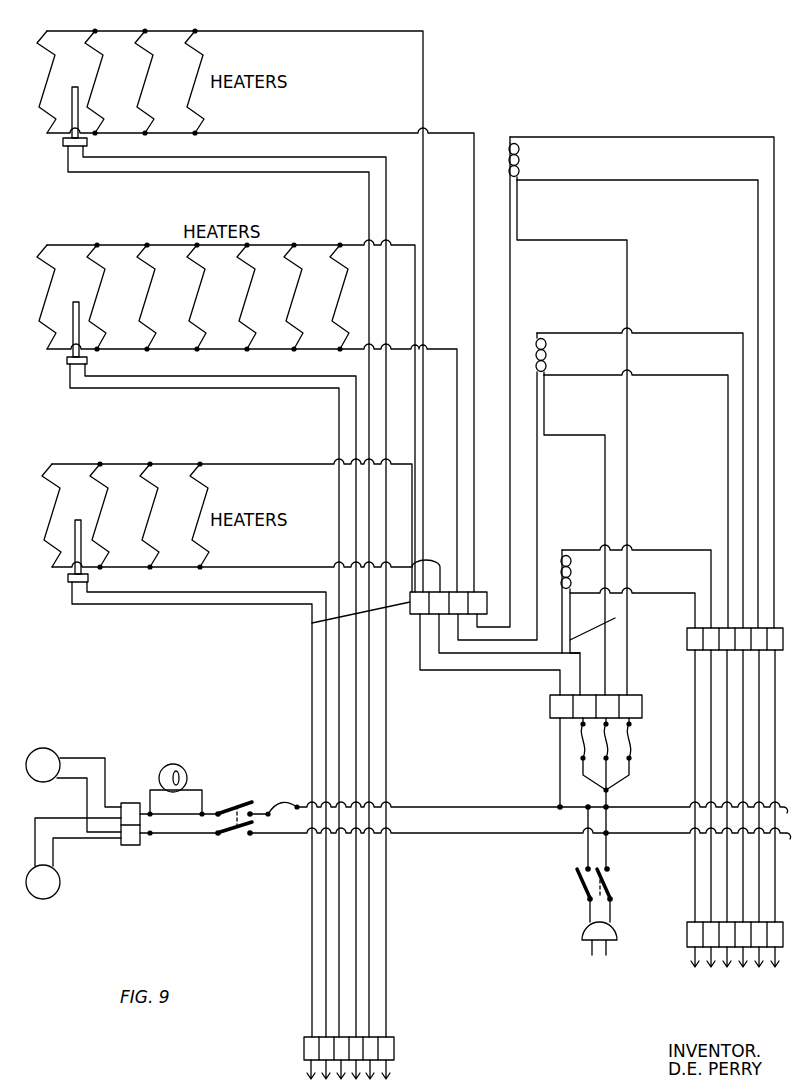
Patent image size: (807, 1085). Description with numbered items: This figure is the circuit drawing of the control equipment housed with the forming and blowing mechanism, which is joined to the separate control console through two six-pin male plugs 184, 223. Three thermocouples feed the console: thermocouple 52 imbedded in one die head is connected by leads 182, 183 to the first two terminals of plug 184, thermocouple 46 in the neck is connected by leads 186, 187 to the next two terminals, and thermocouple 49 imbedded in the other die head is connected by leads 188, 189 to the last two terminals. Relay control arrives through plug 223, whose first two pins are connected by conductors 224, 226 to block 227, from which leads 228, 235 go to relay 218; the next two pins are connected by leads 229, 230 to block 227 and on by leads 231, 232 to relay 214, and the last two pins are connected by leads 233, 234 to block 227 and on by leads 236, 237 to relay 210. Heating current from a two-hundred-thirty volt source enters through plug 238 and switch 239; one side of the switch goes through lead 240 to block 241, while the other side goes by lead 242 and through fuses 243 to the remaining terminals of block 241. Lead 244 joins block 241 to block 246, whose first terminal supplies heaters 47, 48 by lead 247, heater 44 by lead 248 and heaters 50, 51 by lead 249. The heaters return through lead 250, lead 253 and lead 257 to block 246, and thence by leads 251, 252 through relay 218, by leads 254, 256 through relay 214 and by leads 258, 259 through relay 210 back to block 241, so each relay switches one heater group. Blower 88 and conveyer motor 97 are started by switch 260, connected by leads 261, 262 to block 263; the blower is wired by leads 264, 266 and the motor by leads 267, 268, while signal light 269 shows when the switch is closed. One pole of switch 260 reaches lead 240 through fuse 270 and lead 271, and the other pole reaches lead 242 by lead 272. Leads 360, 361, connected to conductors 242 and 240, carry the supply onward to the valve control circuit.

The heaters 44 is at (131, 245).
The thermocouple 46 is at (66, 360).
The heater 47 is at (125, 464).
The heater 48 is at (174, 515).
The thermocouple 49 is at (63, 578).
The heater 50 is at (117, 31).
The heater 51 is at (169, 81).
The thermocouple 52 is at (66, 144).
The blower 88 is at (49, 748).
The motor 97 is at (60, 885).
The lead 182 is at (260, 173).
The lead 183 is at (250, 157).
The six pin male plug 184 is at (400, 1042).
The lead 186 is at (220, 390).
The lead 187 is at (310, 376).
The lead 188 is at (178, 606).
The lead 189 is at (172, 594).
The relay 210 is at (512, 137).
The relay 214 is at (537, 333).
The relay 218 is at (571, 538).
The six pin male plug 223 is at (686, 925).
The conductor 224 is at (694, 664).
The conductor 226 is at (709, 677).
The block 227 is at (689, 628).
The lead 228 is at (657, 551).
The lead 229 is at (726, 684).
The lead 230 is at (741, 698).
The lead 231 is at (710, 375).
The lead 232 is at (665, 333).
The lead 233 is at (757, 872).
The lead 234 is at (773, 883).
The lead 235 is at (655, 593).
The lead 236 is at (580, 180).
The lead 237 is at (672, 137).
The plug 238 is at (582, 928).
The switch 239 is at (578, 882).
The lead 240 is at (585, 731).
The block 241 is at (548, 714).
The lead 242 is at (608, 862).
The fuses 243 is at (604, 740).
The lead 244 is at (472, 671).
The block 246 is at (308, 622).
The lead 247 is at (327, 463).
The lead 248 is at (355, 245).
The lead 249 is at (420, 30).
The lead 250 is at (333, 566).
The lead 251 is at (450, 671).
The lead 252 is at (618, 619).
The lead 253 is at (455, 348).
The lead 254 is at (521, 655).
The lead 256 is at (604, 458).
The lead 257 is at (383, 134).
The lead 258 is at (514, 256).
The lead 259 is at (630, 252).
The switch 260 is at (252, 801).
The lead 261 is at (208, 812).
The lead 262 is at (172, 836).
The block 263 is at (127, 846).
The lead 264 is at (83, 756).
The lead 266 is at (84, 796).
The lead 267 is at (50, 819).
The lead 268 is at (58, 845).
The signal light 269 is at (160, 778).
The fuse 270 is at (278, 805).
The lead 271 is at (400, 806).
The lead 272 is at (265, 835).
The lead 360 is at (657, 832).
The lead 361 is at (655, 806).